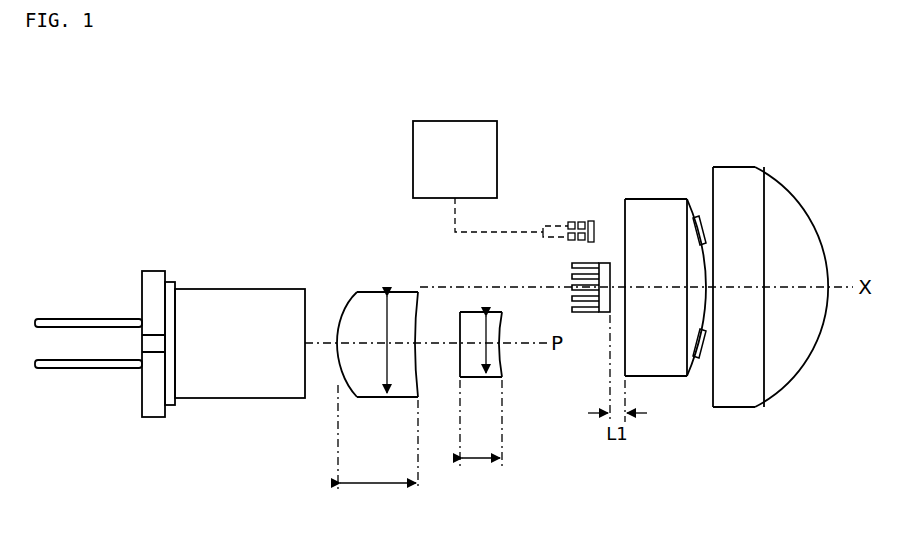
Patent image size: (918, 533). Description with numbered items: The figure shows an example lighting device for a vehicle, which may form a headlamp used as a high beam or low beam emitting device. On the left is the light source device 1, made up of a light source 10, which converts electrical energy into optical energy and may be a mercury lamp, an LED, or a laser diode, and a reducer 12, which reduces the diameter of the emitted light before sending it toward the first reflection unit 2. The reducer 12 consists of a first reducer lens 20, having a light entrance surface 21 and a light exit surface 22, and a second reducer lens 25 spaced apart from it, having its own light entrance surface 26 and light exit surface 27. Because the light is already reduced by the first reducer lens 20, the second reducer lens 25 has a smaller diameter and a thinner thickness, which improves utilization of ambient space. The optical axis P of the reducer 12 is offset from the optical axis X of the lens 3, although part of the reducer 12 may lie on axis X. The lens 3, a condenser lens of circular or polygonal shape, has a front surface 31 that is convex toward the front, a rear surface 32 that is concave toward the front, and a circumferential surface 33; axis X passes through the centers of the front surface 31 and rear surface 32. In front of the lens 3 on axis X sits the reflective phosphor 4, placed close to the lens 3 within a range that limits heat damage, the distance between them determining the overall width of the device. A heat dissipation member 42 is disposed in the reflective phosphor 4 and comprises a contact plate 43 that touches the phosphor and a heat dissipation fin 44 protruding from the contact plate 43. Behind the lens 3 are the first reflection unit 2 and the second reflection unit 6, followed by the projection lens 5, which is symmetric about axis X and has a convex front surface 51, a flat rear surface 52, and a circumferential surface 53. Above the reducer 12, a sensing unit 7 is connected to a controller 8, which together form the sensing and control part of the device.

The light source device 1 is at (362, 184).
The light source 10 is at (288, 268).
The reducer 12 is at (362, 268).
The first reducer lens 20 is at (370, 398).
The light entrance surface 21 is at (338, 378).
The light exit surface 22 is at (421, 373).
The second reducer lens 25 is at (470, 378).
The light entrance surface 26 is at (460, 322).
The light exit surface 27 is at (502, 350).
The controller 8 is at (453, 121).
The sensing unit 7 is at (577, 208).
The reflective phosphor 4 is at (600, 313).
The heat dissipation member 42 is at (506, 248).
The contact plate 43 is at (599, 263).
The heat dissipation fin 44 is at (572, 287).
The lens 3 is at (665, 377).
The front surface 31 is at (692, 224).
The rear surface 32 is at (625, 212).
The circumferential surface 33 is at (646, 199).
The first reflection unit 2 is at (702, 360).
The second reflection unit 6 is at (700, 218).
The projection lens 5 is at (750, 318).
The front surface 51 is at (778, 397).
The rear surface 52 is at (713, 173).
The circumferential surface 53 is at (733, 393).